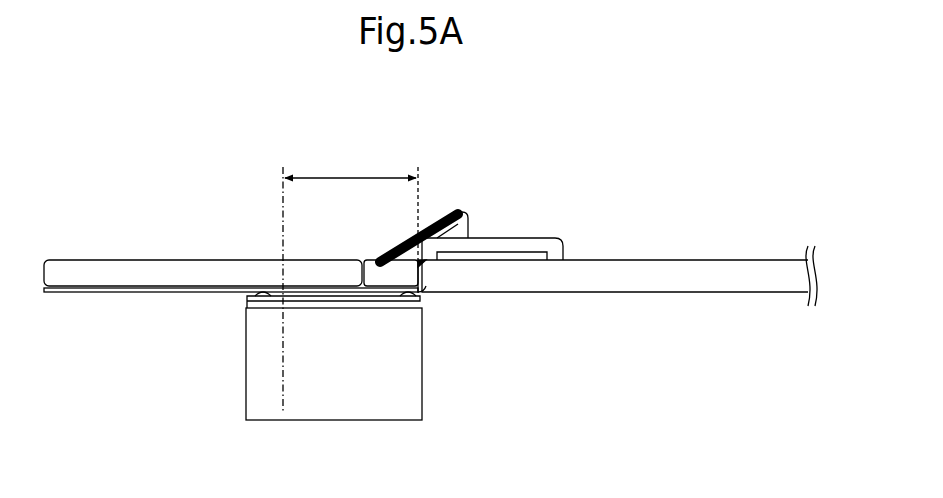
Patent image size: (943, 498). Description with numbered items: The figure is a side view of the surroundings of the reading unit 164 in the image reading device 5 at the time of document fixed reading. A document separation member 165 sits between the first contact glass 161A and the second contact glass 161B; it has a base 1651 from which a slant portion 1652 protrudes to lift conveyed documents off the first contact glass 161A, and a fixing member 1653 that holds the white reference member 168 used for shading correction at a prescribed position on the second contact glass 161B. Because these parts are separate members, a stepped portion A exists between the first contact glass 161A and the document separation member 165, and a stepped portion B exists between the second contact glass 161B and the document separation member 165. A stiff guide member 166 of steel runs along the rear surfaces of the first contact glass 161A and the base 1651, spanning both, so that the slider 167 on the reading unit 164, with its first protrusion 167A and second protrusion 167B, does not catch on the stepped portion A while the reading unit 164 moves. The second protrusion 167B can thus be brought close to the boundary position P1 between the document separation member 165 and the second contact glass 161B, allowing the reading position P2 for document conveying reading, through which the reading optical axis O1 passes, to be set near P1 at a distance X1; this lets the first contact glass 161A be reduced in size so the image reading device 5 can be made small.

The image reading device 5 is at (529, 124).
The first contact glass 161A is at (93, 268).
The second contact glass 161B is at (658, 267).
The reading unit 164 is at (252, 396).
The document separation member 165 is at (433, 205).
The base 1651 is at (428, 289).
The slant portion 1652 is at (467, 211).
The fixing member 1653 is at (531, 237).
The guide member 166 is at (88, 291).
The slider 167 is at (227, 306).
The first protrusion 167A is at (258, 300).
The second protrusion 167B is at (422, 307).
The white reference member 168 is at (512, 259).
The boundary position P1 is at (417, 197).
The reading position P2 is at (282, 273).
The distance X1 is at (350, 162).
The reading optical axis O1 is at (283, 407).
The stepped portion A is at (360, 300).
The stepped portion B is at (429, 297).